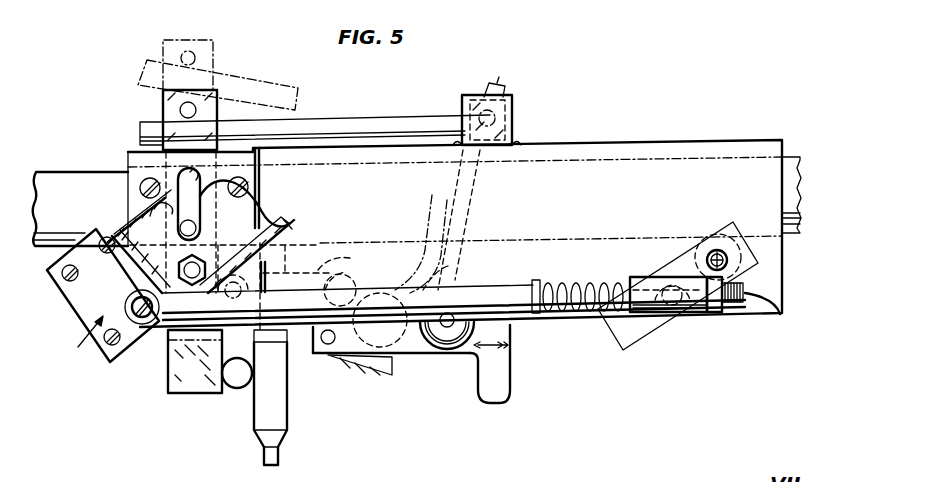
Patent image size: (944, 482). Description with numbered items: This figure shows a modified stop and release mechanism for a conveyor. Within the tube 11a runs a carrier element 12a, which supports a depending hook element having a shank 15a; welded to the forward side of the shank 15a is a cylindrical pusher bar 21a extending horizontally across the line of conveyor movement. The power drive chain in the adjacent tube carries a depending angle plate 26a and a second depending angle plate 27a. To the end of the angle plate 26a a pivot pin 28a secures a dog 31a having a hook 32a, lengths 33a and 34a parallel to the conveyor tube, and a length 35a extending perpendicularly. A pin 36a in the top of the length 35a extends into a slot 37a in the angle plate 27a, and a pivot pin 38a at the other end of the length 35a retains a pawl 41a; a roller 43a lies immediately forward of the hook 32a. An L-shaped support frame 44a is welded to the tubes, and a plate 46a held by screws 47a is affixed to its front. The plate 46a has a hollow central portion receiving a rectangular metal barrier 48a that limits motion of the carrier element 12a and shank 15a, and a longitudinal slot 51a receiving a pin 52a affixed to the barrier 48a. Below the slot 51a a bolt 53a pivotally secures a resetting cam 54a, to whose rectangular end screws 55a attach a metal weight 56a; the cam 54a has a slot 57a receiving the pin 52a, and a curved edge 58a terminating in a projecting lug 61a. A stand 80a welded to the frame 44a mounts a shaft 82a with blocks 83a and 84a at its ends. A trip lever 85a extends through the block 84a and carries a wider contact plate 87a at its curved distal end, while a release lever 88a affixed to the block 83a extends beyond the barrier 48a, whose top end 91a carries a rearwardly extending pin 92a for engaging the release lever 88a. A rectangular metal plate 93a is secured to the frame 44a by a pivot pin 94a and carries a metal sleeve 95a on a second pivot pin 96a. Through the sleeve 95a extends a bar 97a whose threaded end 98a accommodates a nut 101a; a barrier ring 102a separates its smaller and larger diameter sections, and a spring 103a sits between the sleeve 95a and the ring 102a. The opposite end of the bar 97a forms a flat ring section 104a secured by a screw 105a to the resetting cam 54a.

The tube 11a is at (48, 183).
The carrier element 12a is at (266, 339).
The shank 15a is at (288, 421).
The cylindrical pusher bar 21a is at (237, 389).
The depending angle plate 26a is at (228, 268).
The second depending angle plate 27a is at (340, 253).
The pivot pin 28a is at (262, 283).
The dog 31a is at (503, 357).
The hook 32a is at (505, 393).
The length 33a is at (413, 354).
The length 34a is at (309, 342).
The length 35a is at (381, 320).
The pin 36a is at (355, 282).
The slot 37a is at (333, 267).
The pivot pin 38a is at (328, 345).
The pawl 41a is at (377, 363).
The roller 43a is at (452, 348).
The L-shaped support frame 44a is at (622, 148).
The plate 46a is at (138, 157).
The screws 47a is at (140, 187).
The rectangular metal barrier 48a is at (187, 383).
The longitudinal slot 51a is at (206, 160).
The pin 52a is at (193, 230).
The bolt 53a is at (189, 267).
The resetting cam 54a is at (75, 341).
The screws 55a is at (105, 238).
The metal weight 56a is at (80, 302).
The slot 57a is at (166, 209).
The curved edge 58a is at (250, 205).
The projecting lug 61a is at (298, 222).
The stand 80a is at (474, 93).
The shaft 82a is at (500, 117).
The block 83a is at (510, 107).
The block 84a is at (466, 102).
The trip lever 85a is at (468, 188).
The contact plate 87a is at (448, 268).
The release lever 88a is at (340, 127).
The top end 91a is at (168, 105).
The pin 92a is at (192, 108).
The rectangular metal plate 93a is at (678, 260).
The pivot pin 94a is at (717, 250).
The metal sleeve 95a is at (690, 313).
The second pivot pin 96a is at (677, 315).
The bar 97a is at (490, 299).
The threaded end 98a is at (775, 312).
The nut 101a is at (705, 317).
The barrier ring 102a is at (537, 280).
The spring 103a is at (561, 267).
The flat ring section 104a is at (129, 292).
The screw 105a is at (145, 325).